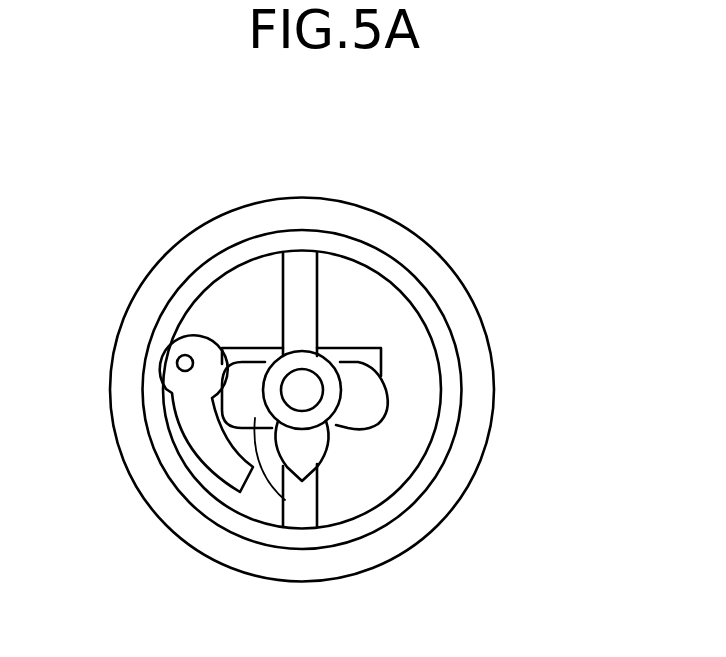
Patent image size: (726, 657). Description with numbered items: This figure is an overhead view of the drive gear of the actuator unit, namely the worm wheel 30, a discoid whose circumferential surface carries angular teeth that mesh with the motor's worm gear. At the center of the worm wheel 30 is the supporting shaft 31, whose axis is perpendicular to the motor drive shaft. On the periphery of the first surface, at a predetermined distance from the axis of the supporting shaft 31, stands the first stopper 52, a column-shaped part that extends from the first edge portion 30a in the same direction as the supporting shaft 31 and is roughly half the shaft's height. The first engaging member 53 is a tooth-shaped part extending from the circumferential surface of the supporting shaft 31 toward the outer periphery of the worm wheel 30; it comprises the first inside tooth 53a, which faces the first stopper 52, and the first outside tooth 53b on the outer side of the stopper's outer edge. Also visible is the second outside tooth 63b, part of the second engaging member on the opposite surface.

The worm wheel 30 is at (497, 271).
The first edge portion 30a is at (397, 243).
The supporting shaft 31 is at (300, 352).
The first stopper 52 is at (162, 373).
The first engaging member 53 is at (450, 484).
The first inside tooth 53a is at (315, 448).
The first outside tooth 53b is at (285, 501).
The second outside tooth 63b is at (363, 403).